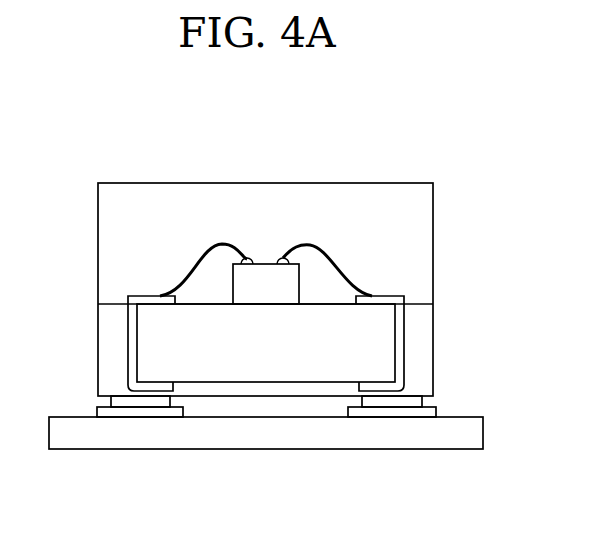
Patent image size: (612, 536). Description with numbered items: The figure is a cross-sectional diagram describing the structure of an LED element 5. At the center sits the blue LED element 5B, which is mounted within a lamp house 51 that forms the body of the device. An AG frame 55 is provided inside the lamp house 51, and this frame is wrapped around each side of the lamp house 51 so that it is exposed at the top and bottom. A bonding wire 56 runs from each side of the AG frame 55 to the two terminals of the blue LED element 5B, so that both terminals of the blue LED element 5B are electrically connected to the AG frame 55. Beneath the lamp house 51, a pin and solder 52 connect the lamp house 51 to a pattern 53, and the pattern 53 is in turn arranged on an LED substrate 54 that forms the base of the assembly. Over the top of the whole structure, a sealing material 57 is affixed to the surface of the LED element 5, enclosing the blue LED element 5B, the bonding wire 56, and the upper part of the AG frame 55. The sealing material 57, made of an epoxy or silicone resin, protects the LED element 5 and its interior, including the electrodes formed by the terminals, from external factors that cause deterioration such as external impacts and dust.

The LED element 5 is at (446, 133).
The blue LED element 5B is at (263, 272).
The lamp house 51 is at (428, 347).
The solder 52 is at (420, 400).
The pattern 53 is at (432, 415).
The LED substrate 54 is at (473, 432).
The AG frame 55 is at (130, 296).
The bonding wire 56 is at (200, 253).
The sealing material 57 is at (345, 190).